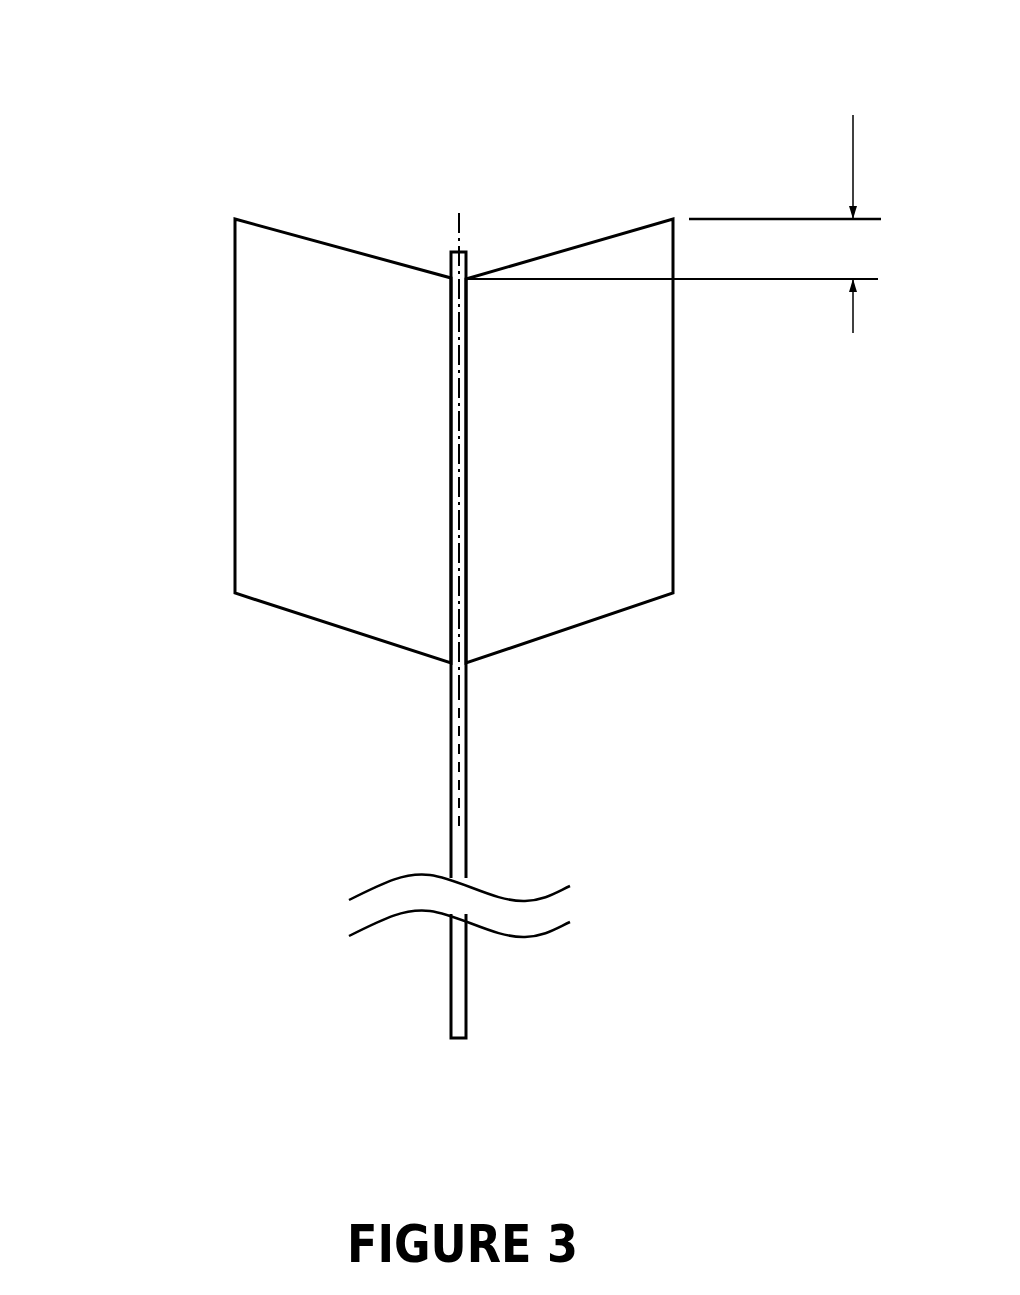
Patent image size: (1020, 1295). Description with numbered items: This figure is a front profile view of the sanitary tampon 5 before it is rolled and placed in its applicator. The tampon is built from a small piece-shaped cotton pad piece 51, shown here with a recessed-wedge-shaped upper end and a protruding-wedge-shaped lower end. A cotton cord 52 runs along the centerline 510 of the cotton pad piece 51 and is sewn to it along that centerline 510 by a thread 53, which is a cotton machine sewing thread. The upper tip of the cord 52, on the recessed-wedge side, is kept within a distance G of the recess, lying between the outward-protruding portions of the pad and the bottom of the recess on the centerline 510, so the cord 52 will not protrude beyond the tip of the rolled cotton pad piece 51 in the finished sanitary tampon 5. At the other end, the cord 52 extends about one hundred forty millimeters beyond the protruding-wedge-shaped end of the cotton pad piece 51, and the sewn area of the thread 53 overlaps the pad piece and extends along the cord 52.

The sanitary tampon 5 is at (502, 193).
The cotton pad piece 51 is at (303, 422).
The centerline 510 is at (458, 470).
The cord 52 is at (457, 857).
The thread 53 is at (467, 766).